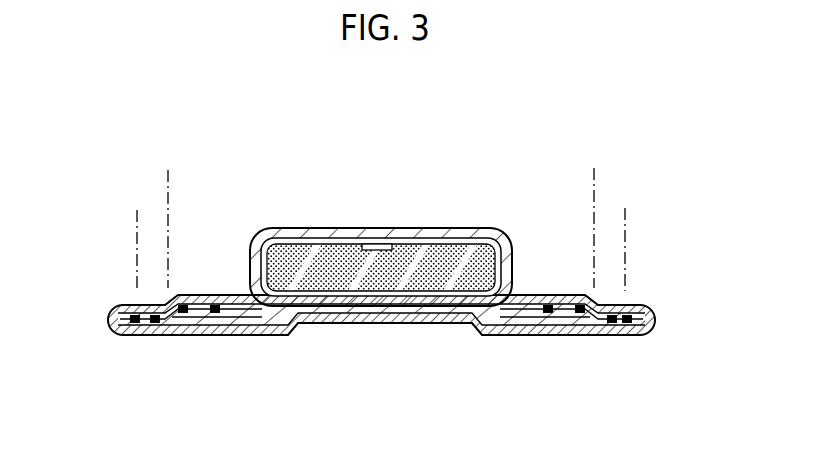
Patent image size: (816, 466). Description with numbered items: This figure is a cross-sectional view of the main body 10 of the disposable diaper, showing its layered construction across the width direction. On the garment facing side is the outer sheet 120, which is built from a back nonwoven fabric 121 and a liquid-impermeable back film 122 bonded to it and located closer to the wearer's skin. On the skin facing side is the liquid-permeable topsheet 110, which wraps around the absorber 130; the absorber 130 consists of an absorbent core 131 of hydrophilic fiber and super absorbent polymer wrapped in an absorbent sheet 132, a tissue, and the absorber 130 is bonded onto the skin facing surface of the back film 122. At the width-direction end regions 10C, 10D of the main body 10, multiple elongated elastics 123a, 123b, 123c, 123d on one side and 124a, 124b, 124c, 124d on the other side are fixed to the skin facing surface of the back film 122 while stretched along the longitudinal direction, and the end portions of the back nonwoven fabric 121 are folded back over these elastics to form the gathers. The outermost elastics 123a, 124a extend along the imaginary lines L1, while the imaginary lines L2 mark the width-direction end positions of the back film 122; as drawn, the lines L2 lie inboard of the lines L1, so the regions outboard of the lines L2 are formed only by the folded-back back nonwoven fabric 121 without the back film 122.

The main body 10 is at (634, 118).
The topsheet 110 is at (492, 229).
The outer sheet 120 is at (381, 369).
The back nonwoven fabric 121 is at (410, 323).
The back film 122 is at (350, 323).
The elastic 123a is at (646, 312).
The elastic 123b is at (614, 333).
The elastic 123c is at (567, 298).
The elastic 123d is at (537, 294).
The elastic 124a is at (132, 317).
The elastic 124b is at (153, 334).
The elastic 124c is at (190, 302).
The elastic 124d is at (221, 298).
The absorber 130 is at (381, 209).
The absorbent core 131 is at (403, 258).
The absorbent sheet 132 is at (442, 163).
The end region 10C is at (640, 353).
The end region 10D is at (232, 353).
The imaginary line L1 is at (381, 236).
The imaginary line L2 is at (380, 214).